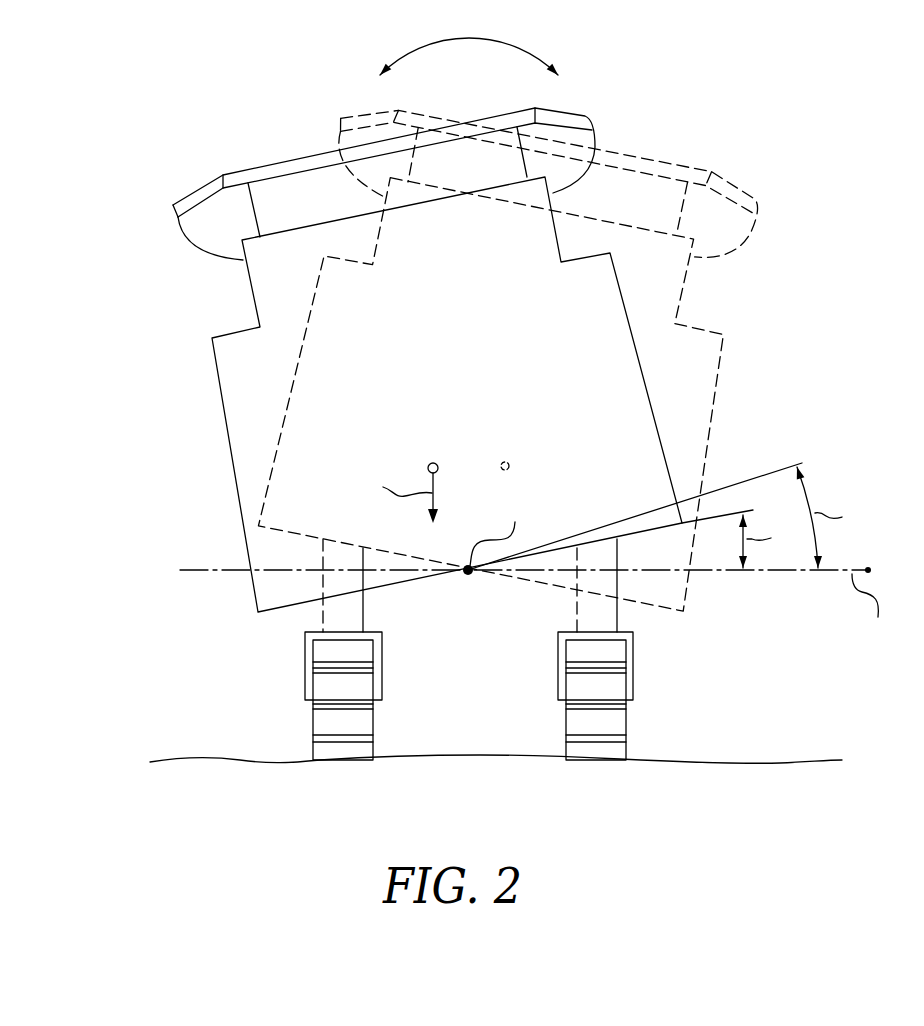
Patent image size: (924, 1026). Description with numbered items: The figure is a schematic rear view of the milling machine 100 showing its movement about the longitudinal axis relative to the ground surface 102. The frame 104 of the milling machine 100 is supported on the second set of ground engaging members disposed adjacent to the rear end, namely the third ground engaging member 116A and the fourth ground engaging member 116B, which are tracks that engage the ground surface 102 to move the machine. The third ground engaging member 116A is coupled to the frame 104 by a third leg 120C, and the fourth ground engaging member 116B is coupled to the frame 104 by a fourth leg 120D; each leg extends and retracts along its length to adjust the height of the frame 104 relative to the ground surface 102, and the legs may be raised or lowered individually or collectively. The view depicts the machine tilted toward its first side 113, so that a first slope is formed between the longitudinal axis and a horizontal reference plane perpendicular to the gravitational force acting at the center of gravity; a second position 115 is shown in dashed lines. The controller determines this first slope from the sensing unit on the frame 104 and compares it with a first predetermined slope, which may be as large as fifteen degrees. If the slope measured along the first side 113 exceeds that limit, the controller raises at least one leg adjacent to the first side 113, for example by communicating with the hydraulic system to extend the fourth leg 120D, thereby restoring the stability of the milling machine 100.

The milling machine 100 is at (630, 97).
The ground surface 102 is at (815, 762).
The frame 104 is at (440, 388).
The first side 113 is at (192, 385).
The apparatus in second tilted position 115 is at (652, 333).
The third ground engaging member 116A is at (628, 725).
The fourth ground engaging member 116B is at (373, 725).
The third leg 120C is at (617, 587).
The fourth leg 120D is at (363, 603).